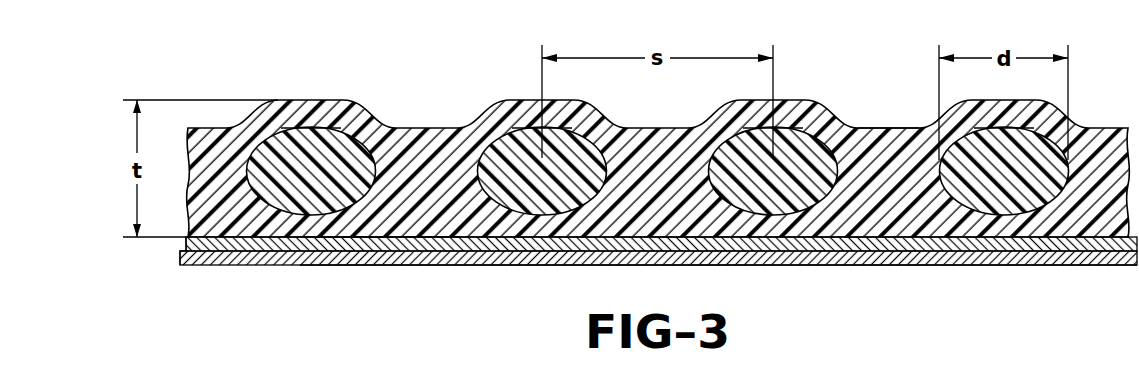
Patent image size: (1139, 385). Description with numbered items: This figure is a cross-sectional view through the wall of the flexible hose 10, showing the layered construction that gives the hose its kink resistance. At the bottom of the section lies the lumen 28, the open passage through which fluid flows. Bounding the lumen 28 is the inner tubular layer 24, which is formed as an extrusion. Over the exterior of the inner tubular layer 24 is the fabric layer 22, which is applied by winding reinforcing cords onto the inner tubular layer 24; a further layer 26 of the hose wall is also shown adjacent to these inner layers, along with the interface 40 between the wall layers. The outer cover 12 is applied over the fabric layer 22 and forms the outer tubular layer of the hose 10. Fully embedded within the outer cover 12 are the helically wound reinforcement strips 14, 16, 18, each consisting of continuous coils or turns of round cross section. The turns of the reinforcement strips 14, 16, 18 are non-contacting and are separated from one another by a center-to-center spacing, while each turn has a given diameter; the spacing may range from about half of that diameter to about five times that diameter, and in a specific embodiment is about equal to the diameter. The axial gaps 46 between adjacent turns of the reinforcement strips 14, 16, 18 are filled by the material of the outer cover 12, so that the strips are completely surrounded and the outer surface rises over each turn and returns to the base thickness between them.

The hose 10 is at (626, 186).
The outer cover 12 is at (383, 129).
The reinforcement strip 14 is at (312, 138).
The reinforcement strip 16 is at (503, 127).
The reinforcement strip 18 is at (803, 130).
The fabric layer 22 is at (186, 240).
The inner tubular layer 24 is at (238, 251).
The backing layer 26 is at (305, 266).
The lumen 28 is at (485, 306).
The interface 40 is at (382, 239).
The axial gaps 46 is at (878, 128).